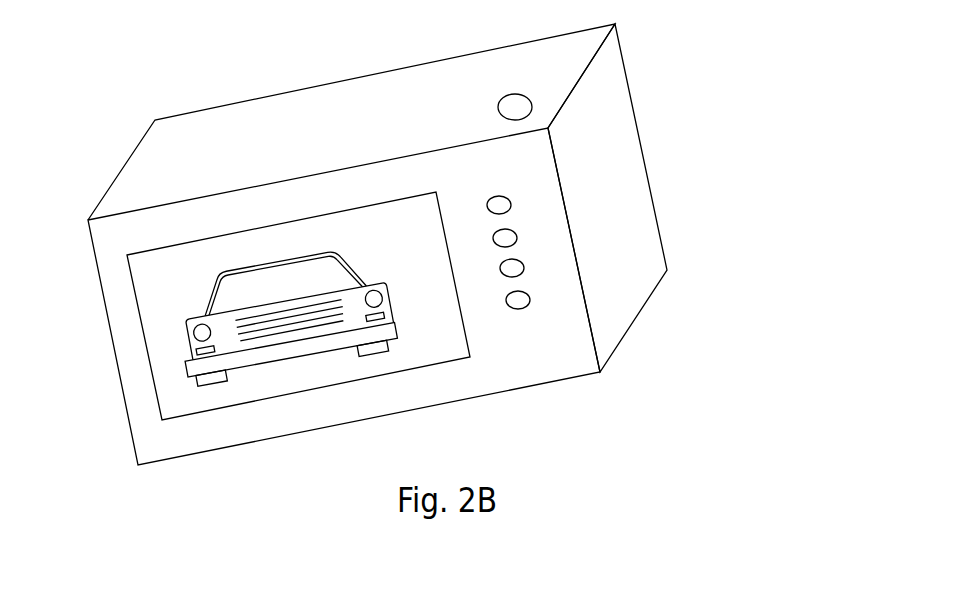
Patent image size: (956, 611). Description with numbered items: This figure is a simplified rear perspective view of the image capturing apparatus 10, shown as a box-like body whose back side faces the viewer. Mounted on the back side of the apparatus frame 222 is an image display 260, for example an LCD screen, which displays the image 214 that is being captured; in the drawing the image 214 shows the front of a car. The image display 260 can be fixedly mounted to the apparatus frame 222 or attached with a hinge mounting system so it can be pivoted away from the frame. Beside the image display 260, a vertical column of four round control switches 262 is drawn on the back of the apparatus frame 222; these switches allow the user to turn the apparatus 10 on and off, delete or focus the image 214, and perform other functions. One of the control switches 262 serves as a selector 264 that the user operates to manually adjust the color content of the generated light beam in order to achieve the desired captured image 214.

The image capturing apparatus 10 is at (389, 244).
The apparatus frame 222 is at (612, 148).
The selector 264 is at (508, 235).
The control switches 262 is at (538, 262).
The image display 260 is at (137, 298).
The image 214 is at (173, 357).